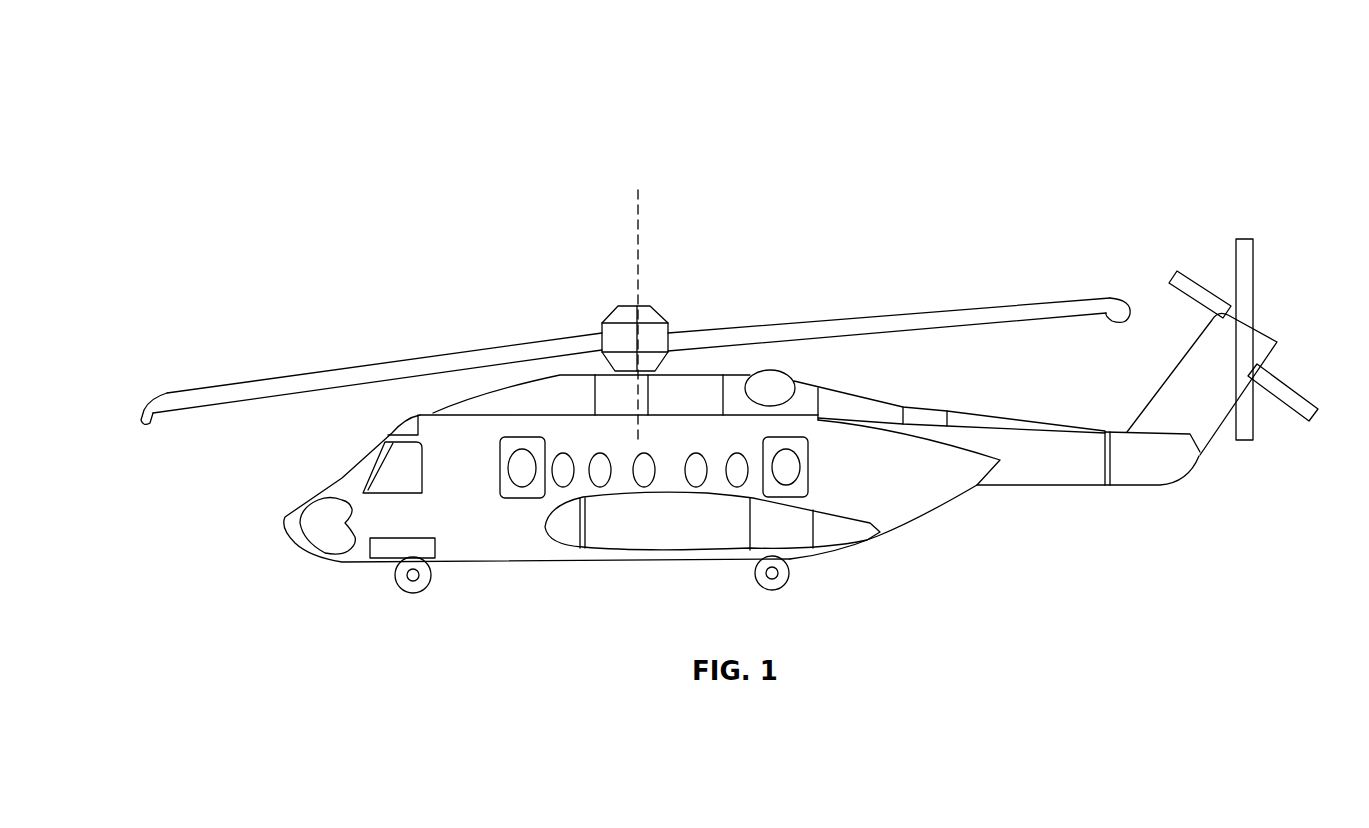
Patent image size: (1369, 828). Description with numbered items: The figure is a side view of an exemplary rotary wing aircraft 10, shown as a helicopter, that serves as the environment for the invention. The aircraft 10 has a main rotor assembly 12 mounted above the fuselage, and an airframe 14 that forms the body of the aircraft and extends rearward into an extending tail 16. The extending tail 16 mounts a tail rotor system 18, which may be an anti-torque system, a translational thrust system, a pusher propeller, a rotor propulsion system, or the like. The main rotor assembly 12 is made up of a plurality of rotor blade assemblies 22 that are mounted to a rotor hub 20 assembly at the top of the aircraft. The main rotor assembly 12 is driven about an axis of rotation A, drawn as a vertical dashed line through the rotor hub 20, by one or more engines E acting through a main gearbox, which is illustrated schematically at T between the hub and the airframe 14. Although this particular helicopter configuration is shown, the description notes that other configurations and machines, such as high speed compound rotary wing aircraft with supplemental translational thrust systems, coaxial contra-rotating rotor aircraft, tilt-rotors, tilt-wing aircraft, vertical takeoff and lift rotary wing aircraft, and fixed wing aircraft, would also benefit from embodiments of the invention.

The rotary wing aircraft 10 is at (933, 95).
The main rotor assembly 12 is at (606, 299).
The airframe 14 is at (483, 552).
The extending tail 16 is at (1062, 474).
The tail rotor system 18 is at (1268, 328).
The rotor hub 20 is at (652, 313).
The rotor blade assemblies 22 is at (467, 342).
The axis of rotation A is at (641, 242).
The main gearbox T is at (603, 388).
The engines E is at (662, 540).